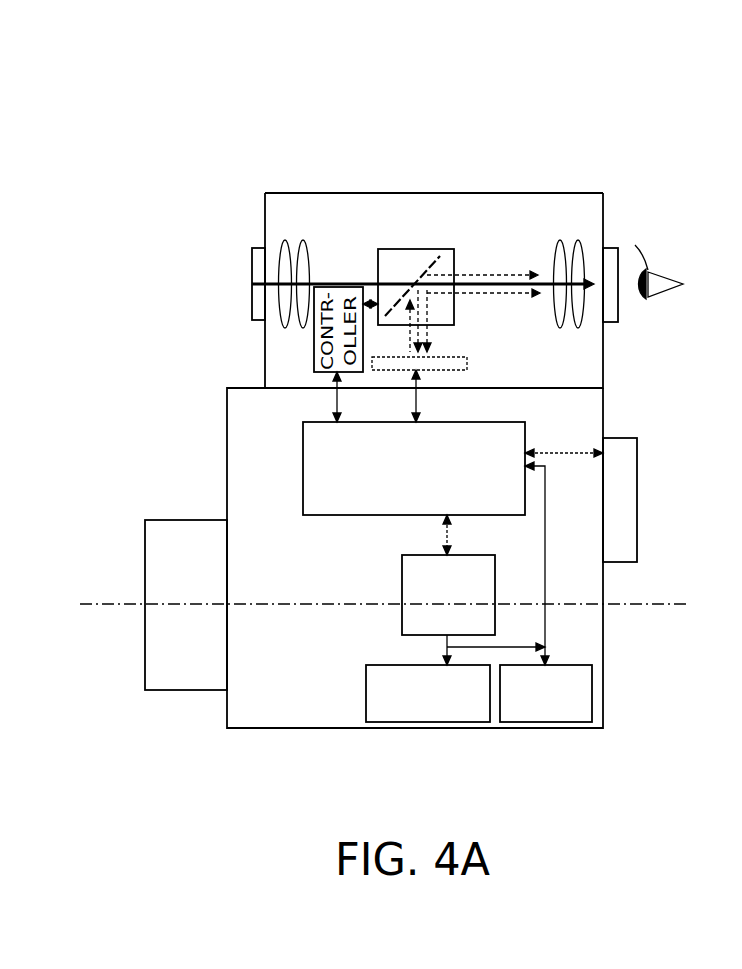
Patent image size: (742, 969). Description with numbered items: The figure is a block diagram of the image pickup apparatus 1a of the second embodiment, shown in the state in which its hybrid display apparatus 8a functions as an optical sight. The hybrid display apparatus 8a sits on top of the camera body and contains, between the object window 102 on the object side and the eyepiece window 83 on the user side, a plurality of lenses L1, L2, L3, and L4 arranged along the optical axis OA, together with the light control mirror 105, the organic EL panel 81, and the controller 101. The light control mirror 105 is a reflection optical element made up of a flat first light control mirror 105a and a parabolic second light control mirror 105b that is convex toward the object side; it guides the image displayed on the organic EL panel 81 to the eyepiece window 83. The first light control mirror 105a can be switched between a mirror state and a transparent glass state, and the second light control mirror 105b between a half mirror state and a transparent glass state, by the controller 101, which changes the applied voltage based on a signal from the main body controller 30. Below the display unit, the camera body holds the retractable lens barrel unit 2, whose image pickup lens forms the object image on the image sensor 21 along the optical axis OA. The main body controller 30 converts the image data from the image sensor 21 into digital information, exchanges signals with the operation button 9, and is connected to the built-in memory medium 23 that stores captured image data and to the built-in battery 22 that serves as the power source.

The image pickup apparatus 1a is at (691, 93).
The controller 101 is at (314, 360).
The hybrid display apparatus 8a is at (533, 192).
The object window 102 is at (255, 307).
The lens L1 is at (280, 250).
The lens L2 is at (305, 243).
The lens L3 is at (574, 242).
The lens L4 is at (596, 240).
The light control mirror 105 is at (522, 132).
The first light control mirror 105a is at (425, 247).
The second light control mirror 105b is at (456, 250).
The eyepiece window 83 is at (617, 248).
The organic EL panel 81 is at (467, 358).
The main body controller 30 is at (453, 543).
The operation button 9 is at (640, 515).
The optical axis OA is at (109, 606).
The lens barrel unit 2 is at (163, 652).
The image sensor 21 is at (402, 630).
The memory medium 23 is at (473, 722).
The battery 22 is at (565, 722).